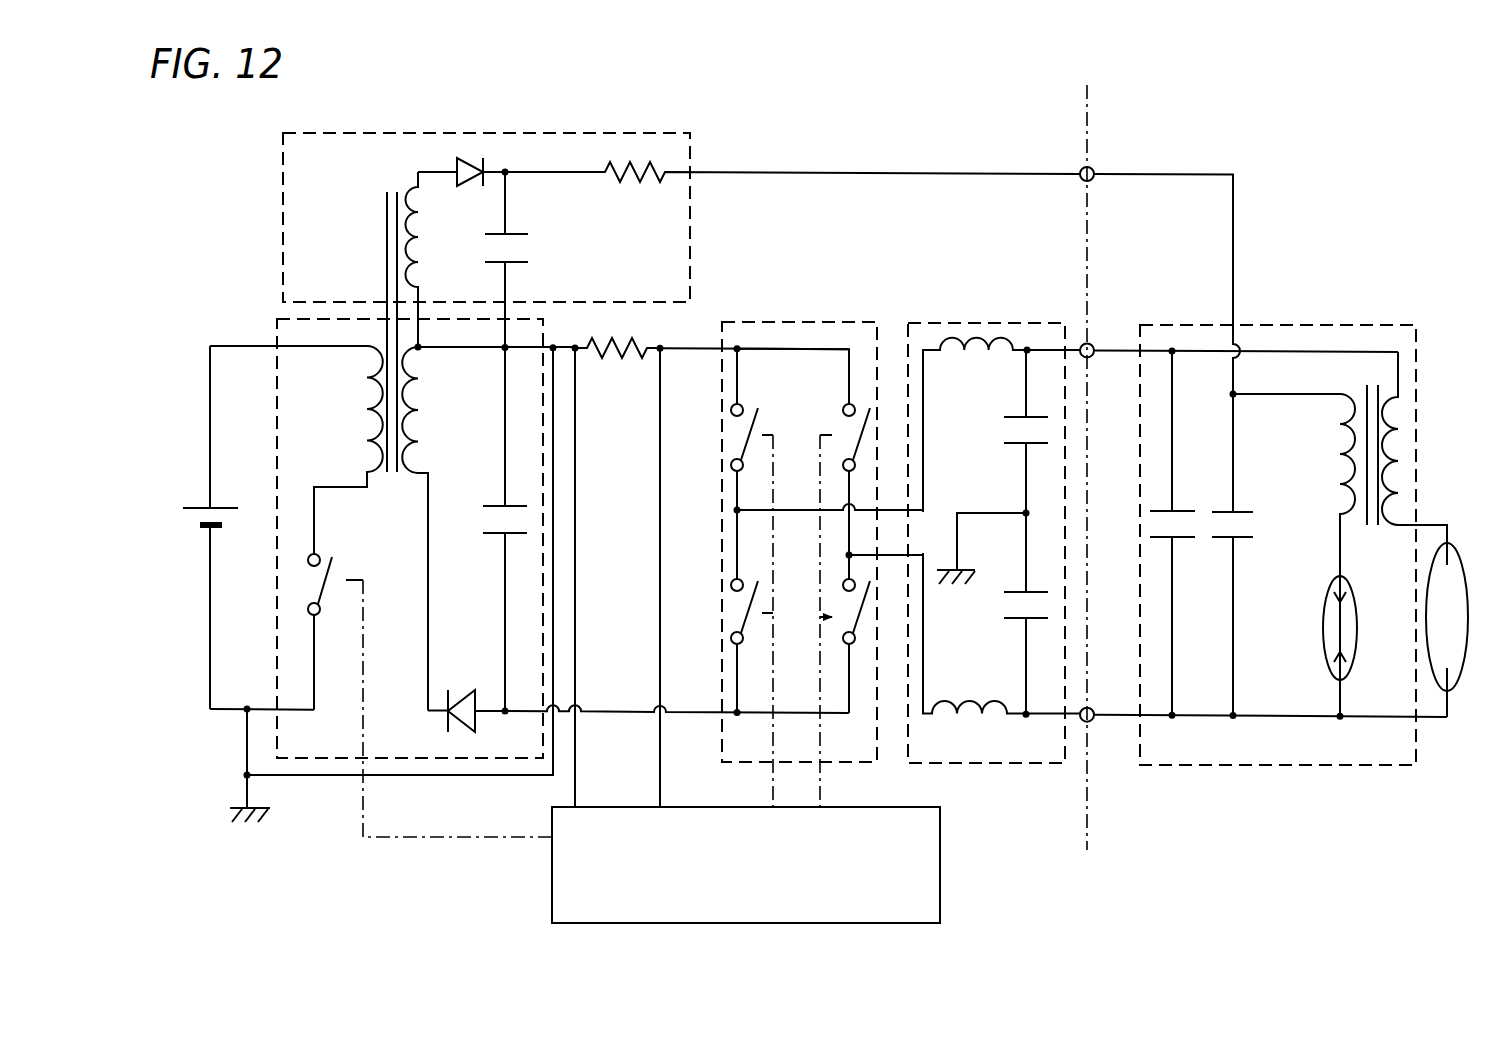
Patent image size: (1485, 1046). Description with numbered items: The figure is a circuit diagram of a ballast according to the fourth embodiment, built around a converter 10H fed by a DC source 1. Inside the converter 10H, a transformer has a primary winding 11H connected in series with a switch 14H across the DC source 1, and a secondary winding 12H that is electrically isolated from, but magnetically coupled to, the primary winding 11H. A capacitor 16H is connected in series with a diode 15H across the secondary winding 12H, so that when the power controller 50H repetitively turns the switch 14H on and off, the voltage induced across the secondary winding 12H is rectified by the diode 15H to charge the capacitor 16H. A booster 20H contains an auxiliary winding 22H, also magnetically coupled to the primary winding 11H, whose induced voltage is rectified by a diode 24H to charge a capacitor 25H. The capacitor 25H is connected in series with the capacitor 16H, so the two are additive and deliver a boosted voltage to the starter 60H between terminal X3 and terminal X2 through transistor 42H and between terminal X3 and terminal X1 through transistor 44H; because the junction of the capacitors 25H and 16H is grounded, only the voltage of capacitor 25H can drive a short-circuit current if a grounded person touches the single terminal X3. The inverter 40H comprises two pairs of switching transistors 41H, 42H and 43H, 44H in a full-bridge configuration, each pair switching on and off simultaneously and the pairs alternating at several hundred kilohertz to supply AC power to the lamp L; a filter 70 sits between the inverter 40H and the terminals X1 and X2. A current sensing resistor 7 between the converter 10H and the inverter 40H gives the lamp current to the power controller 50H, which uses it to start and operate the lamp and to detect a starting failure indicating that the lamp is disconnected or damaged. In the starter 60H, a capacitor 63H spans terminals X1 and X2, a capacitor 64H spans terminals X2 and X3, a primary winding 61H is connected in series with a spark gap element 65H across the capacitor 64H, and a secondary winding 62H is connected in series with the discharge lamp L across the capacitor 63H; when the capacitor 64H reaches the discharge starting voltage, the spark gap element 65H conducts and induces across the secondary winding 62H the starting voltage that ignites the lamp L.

The DC source 1 is at (190, 513).
The current sensing resistor 7 is at (607, 370).
The converter 10H is at (275, 318).
The primary winding 11H is at (360, 380).
The secondary winding 12H is at (422, 379).
The switch 14H is at (307, 572).
The diode 15H is at (462, 687).
The capacitor 16H is at (475, 520).
The booster 20H is at (281, 136).
The auxiliary winding 22H is at (420, 205).
The diode 24H is at (445, 152).
The capacitor 25H is at (535, 243).
The inverter 40H is at (808, 320).
The switching transistor 41H is at (725, 427).
The switching transistor 42H is at (835, 602).
The switching transistor 43H is at (840, 437).
The switching transistor 44H is at (732, 613).
The power controller 50H is at (940, 842).
The starter 60H is at (1293, 323).
The primary winding 61H is at (1337, 480).
The secondary winding 62H is at (1397, 460).
The capacitor 63H is at (1150, 523).
The capacitor 64H is at (1258, 527).
The spark gap element 65H is at (1317, 615).
The filter 70 is at (940, 322).
The discharge lamp L is at (1435, 585).
The first output terminal X1 is at (1102, 334).
The second output terminal X2 is at (1102, 734).
The third output terminal X3 is at (1102, 188).